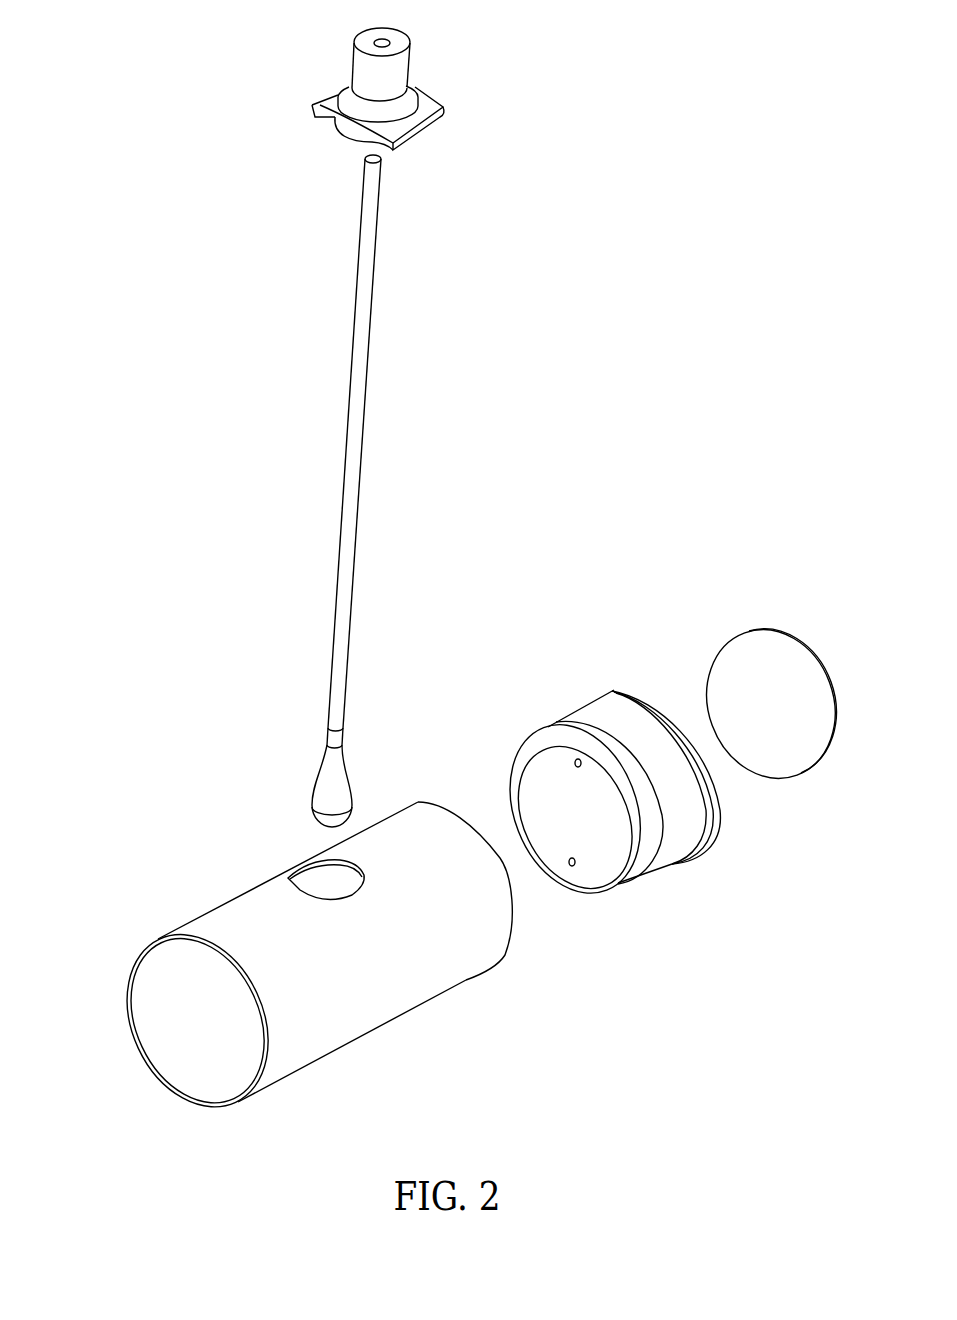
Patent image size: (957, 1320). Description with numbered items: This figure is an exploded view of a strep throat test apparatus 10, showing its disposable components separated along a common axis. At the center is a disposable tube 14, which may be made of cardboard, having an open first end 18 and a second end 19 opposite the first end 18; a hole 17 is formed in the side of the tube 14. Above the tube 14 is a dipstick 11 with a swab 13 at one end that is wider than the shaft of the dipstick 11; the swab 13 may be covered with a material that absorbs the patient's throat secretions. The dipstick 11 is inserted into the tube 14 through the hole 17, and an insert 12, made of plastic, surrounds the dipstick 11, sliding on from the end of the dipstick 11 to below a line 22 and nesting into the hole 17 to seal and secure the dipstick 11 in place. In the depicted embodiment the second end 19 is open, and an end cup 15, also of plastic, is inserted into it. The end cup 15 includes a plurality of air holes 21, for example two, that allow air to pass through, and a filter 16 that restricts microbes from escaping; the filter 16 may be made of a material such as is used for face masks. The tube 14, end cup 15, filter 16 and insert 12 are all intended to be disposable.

The strep throat test apparatus 10 is at (850, 153).
The dipstick 11 is at (362, 484).
The insert 12 is at (433, 100).
The swab 13 is at (350, 787).
The tube 14 is at (315, 964).
The end cup 15 is at (604, 804).
The filter 16 is at (823, 680).
The hole 17 is at (333, 885).
The first end 18 is at (183, 997).
The second end 19 is at (503, 858).
The air holes 21 is at (582, 768).
The line 22 is at (328, 728).